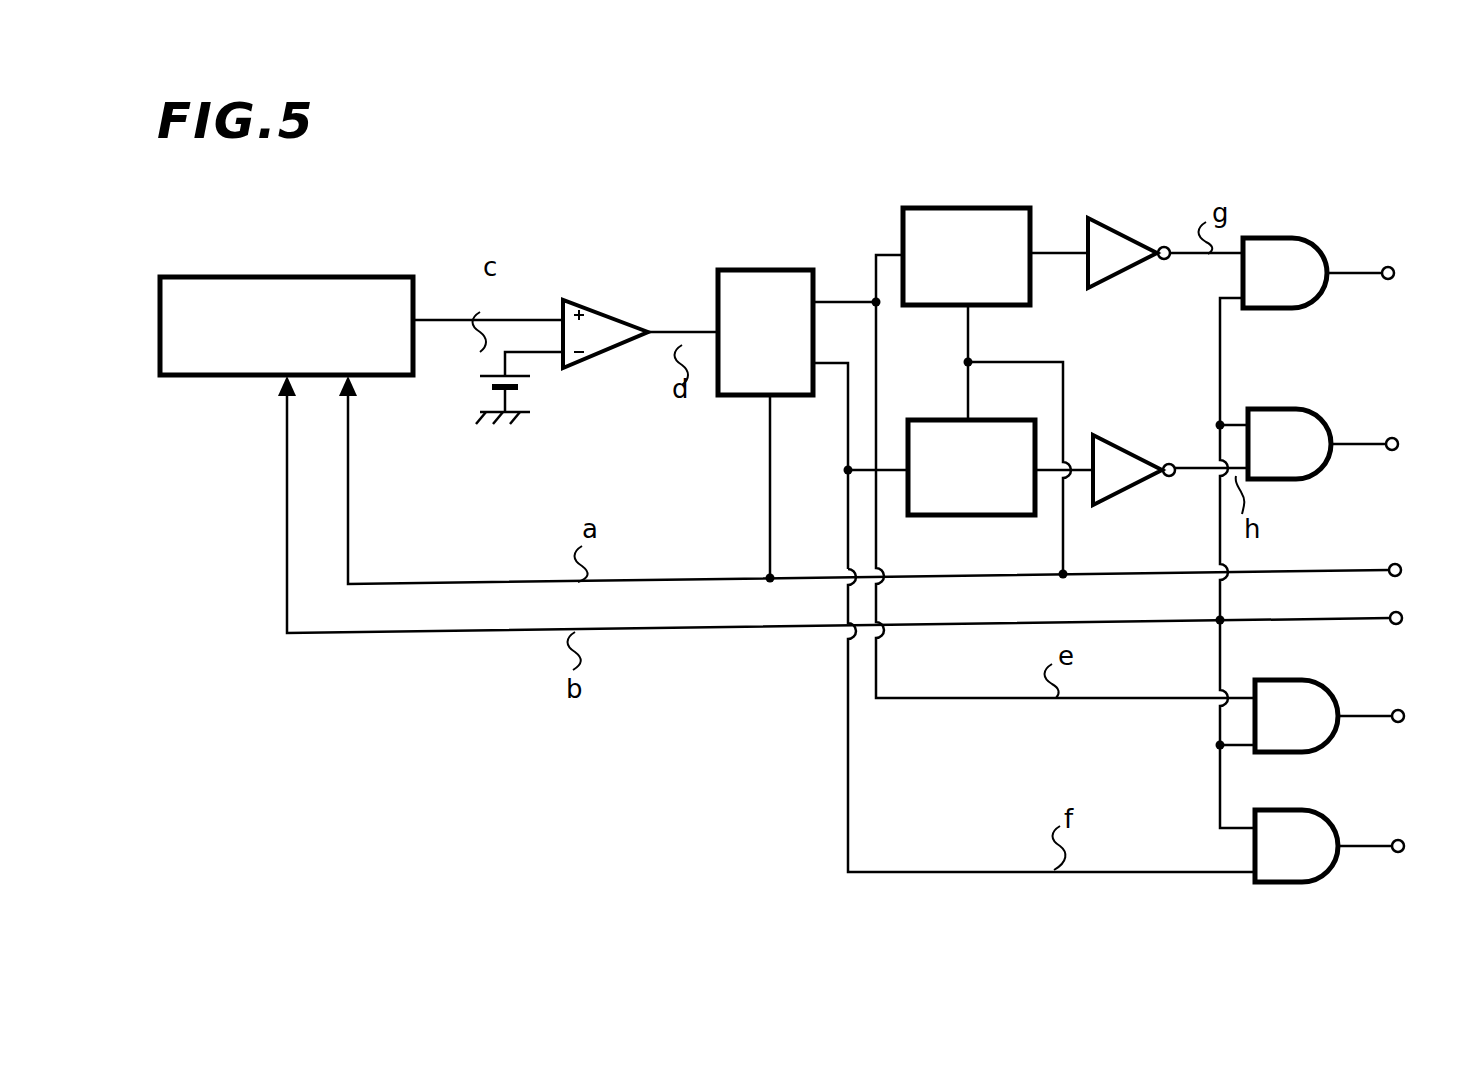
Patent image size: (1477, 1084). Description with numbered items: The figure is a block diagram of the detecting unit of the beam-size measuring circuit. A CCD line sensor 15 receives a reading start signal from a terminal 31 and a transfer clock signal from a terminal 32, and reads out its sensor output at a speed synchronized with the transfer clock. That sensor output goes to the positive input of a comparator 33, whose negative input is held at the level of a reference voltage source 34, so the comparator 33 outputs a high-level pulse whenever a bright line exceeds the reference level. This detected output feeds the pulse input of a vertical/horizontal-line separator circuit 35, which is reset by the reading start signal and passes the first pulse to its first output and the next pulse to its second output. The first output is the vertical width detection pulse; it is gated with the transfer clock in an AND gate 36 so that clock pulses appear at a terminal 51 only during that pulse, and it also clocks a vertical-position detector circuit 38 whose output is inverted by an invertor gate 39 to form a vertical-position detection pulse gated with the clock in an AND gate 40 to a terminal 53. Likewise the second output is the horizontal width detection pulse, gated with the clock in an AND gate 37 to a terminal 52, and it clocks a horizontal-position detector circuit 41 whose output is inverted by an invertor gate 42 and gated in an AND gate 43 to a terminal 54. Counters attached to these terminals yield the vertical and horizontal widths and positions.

The CCD line sensor 15 is at (355, 277).
The comparator 33 is at (600, 300).
The reference voltage source 34 is at (530, 392).
The vertical/horizontal-line separator circuit 35 is at (752, 270).
The vertical-position detector circuit 38 is at (978, 208).
The horizontal-position detector circuit 41 is at (1006, 420).
The invertor gate 39 is at (1128, 230).
The invertor gate 42 is at (1134, 448).
The AND gate 40 is at (1288, 238).
The AND gate 43 is at (1294, 410).
The AND gate 36 is at (1324, 680).
The AND gate 37 is at (1322, 810).
The terminal 53 is at (1390, 266).
The terminal 54 is at (1394, 436).
The terminal 31 is at (1396, 562).
The terminal 32 is at (1402, 618).
The terminal 51 is at (1404, 716).
The terminal 52 is at (1404, 846).